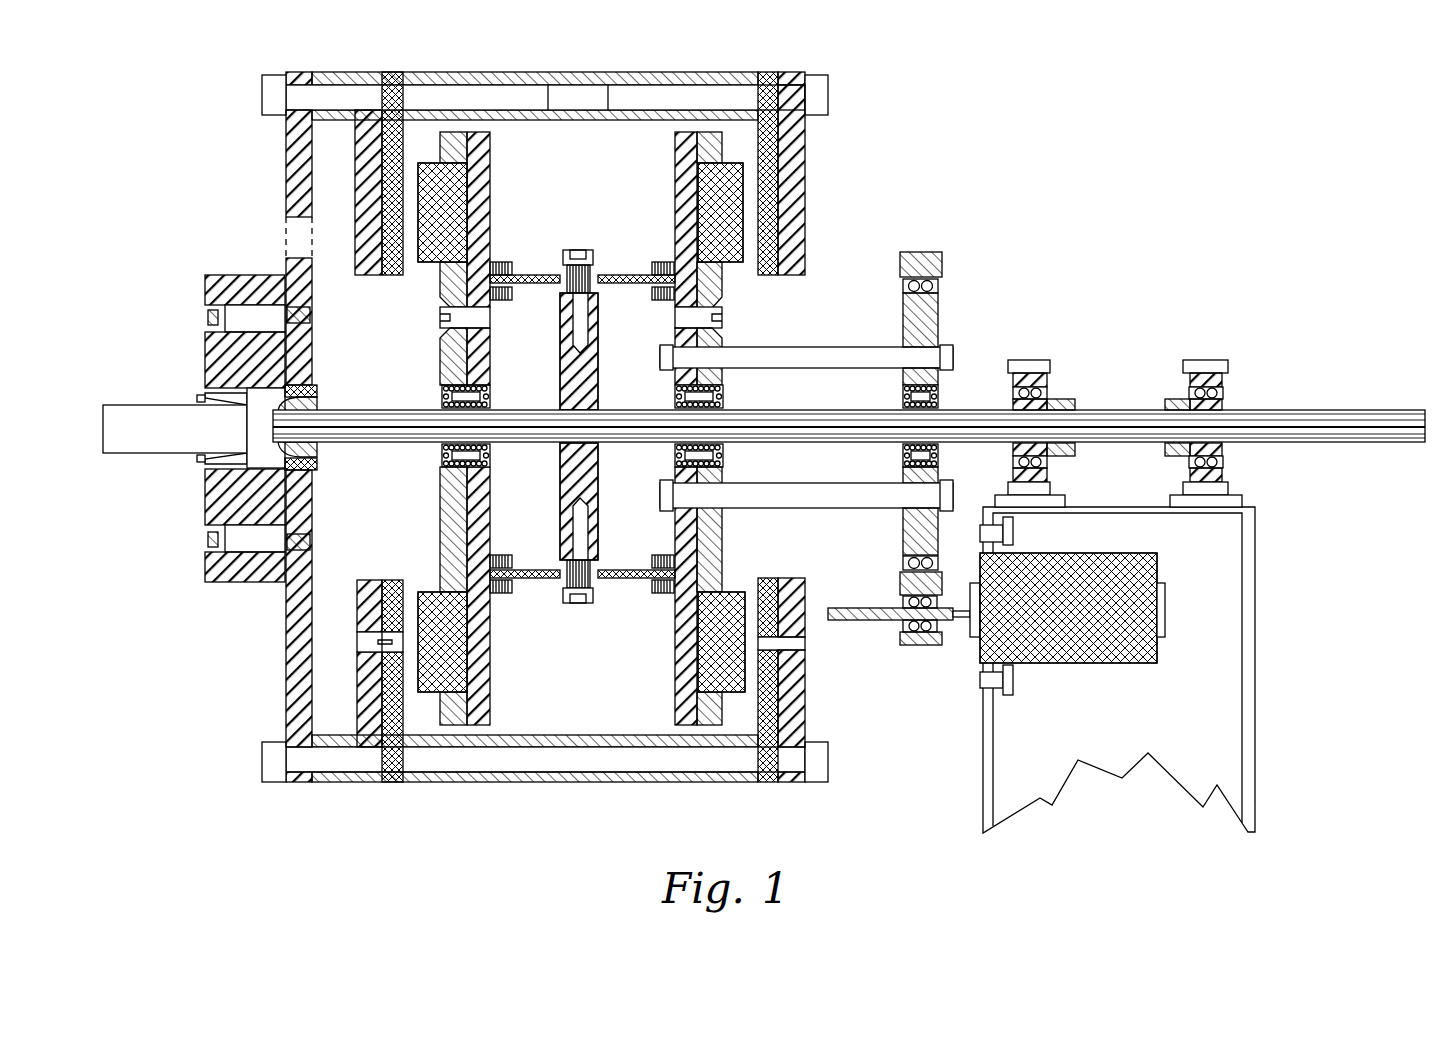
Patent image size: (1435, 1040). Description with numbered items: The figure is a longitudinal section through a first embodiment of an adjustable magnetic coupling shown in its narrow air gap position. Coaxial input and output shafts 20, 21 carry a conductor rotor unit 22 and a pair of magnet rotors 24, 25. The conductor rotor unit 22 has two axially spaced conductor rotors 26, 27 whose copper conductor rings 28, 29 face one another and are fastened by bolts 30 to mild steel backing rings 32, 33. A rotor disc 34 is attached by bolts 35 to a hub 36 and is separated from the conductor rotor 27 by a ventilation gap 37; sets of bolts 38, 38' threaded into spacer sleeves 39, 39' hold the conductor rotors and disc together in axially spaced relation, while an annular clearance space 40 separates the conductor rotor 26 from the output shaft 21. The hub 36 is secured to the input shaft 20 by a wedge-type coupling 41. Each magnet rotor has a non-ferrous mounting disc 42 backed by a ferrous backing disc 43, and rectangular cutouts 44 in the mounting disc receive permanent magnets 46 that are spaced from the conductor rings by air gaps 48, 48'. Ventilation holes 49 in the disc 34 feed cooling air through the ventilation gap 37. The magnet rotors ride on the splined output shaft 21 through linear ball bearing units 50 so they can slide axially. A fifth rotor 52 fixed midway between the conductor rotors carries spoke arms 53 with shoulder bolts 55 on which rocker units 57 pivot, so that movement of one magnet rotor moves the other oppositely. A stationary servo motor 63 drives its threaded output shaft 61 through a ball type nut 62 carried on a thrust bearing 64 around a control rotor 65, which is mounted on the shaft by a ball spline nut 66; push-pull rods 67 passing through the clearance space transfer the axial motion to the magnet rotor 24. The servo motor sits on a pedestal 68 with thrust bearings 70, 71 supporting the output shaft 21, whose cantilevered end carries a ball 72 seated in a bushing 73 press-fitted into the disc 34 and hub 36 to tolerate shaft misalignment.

The input shaft 20 is at (152, 412).
The output shaft 21 is at (1360, 410).
The conductor rotor unit 22 is at (280, 190).
The magnet rotor 24 is at (668, 190).
The magnet rotor 25 is at (498, 180).
The conductor rotor 26 is at (812, 142).
The conductor rotor 27 is at (350, 190).
The conductor ring 28 is at (770, 72).
The conductor ring 29 is at (402, 74).
The bolts 30 is at (362, 640).
The backing ring 32 is at (802, 190).
The backing ring 33 is at (368, 280).
The rotor disc 34 is at (300, 160).
The bolts 35 is at (208, 292).
The hub 36 is at (210, 505).
The ventilation gap 37 is at (330, 132).
The bolts 38 is at (496, 97).
The bolts 38' is at (857, 92).
The spacer sleeve 39 is at (545, 71).
The spacer sleeve 39' is at (545, 788).
The annular clearance space 40 is at (783, 305).
The wedge-type coupling 41 is at (200, 460).
The mounting disc 42 is at (455, 352).
The backing disc 43 is at (484, 348).
The rectangular cutouts 44 is at (430, 265).
The permanent magnets 46 is at (432, 592).
The air gap 48 is at (736, 249).
The air gap 48' is at (436, 644).
The ventilation holes 49 is at (286, 242).
The linear ball bearing unit 50 is at (490, 456).
The fifth rotor 52 is at (562, 385).
The spoke arms 53 is at (560, 306).
The shoulder bolts 55 is at (578, 250).
The rocker units 57 is at (556, 592).
The output shaft 61 is at (850, 620).
The ball type nut 62 is at (942, 632).
The servo motor 63 is at (1085, 655).
The thrust bearing 64 is at (905, 565).
The control rotor 65 is at (905, 540).
The ball spline nut 66 is at (903, 396).
The push-pull rods 67 is at (830, 358).
The pedestal 68 is at (938, 320).
The thrust bearing 70 is at (1052, 385).
The thrust bearing 71 is at (1230, 388).
The ball 72 is at (322, 458).
The bushing 73 is at (318, 388).